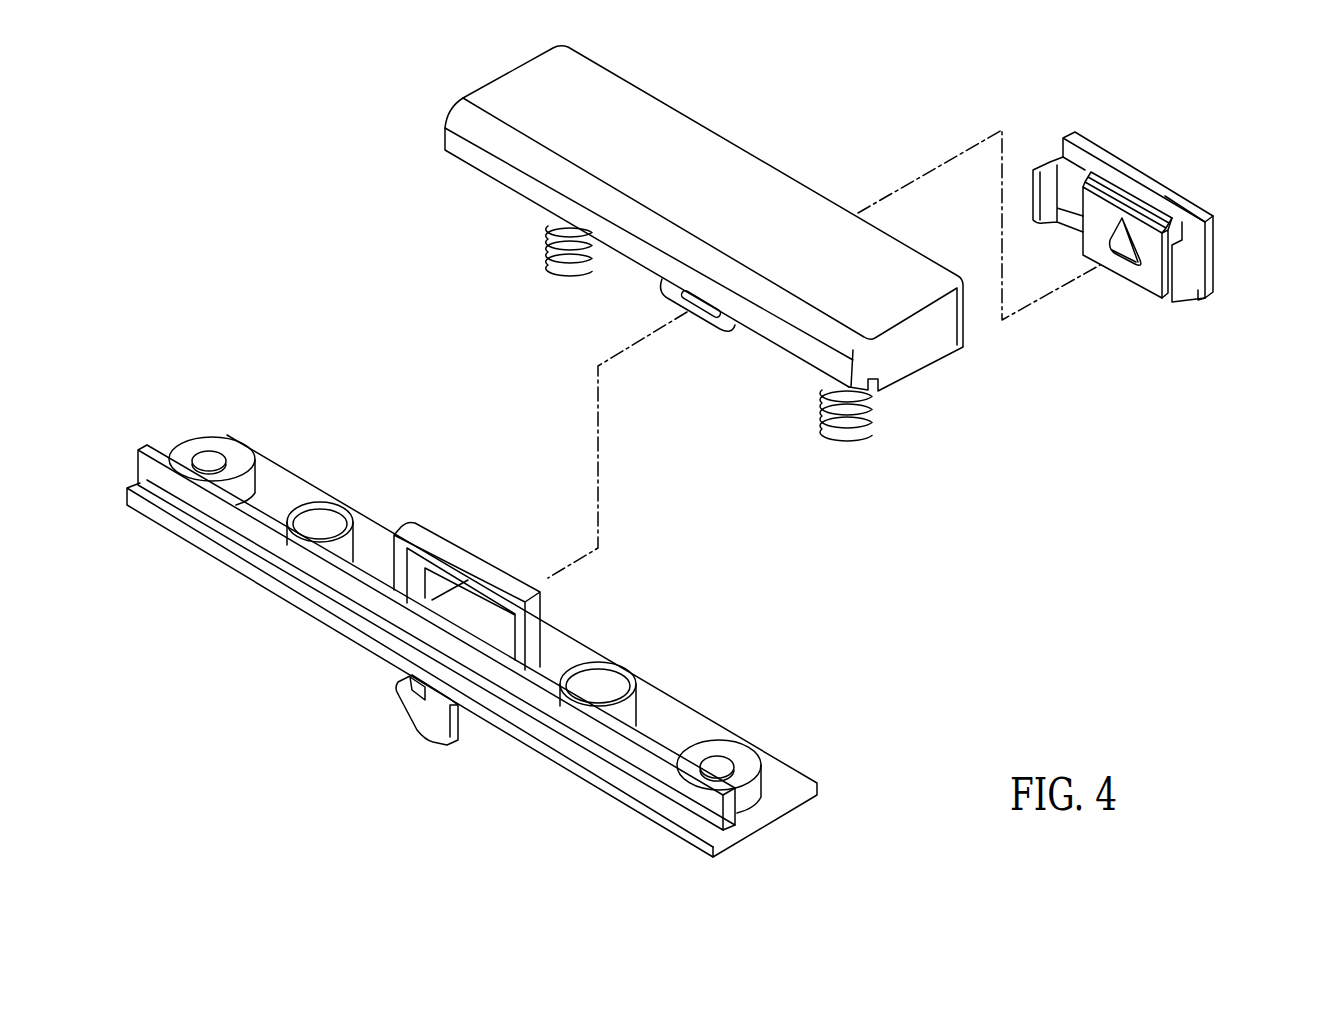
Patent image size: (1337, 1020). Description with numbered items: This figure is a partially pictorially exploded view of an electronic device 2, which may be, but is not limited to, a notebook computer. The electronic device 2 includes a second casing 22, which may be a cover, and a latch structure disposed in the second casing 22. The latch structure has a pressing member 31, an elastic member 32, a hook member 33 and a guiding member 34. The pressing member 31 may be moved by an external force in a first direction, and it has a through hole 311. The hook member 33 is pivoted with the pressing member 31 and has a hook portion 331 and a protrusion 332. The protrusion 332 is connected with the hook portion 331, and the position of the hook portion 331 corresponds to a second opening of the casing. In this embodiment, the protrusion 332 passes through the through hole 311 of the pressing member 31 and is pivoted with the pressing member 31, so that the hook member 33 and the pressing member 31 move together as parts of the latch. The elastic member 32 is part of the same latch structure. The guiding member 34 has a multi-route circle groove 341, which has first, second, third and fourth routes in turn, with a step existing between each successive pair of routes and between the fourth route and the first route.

The electronic device 2 is at (199, 201).
The second casing 22 is at (793, 807).
The pressing member 31 is at (728, 178).
The through hole 311 is at (728, 332).
The elastic member 32 is at (573, 268).
The hook member 33 is at (437, 742).
The hook portion 331 is at (402, 700).
The protrusion 332 is at (475, 612).
The guiding member 34 is at (1149, 275).
The multi-route circle groove 341 is at (1126, 226).